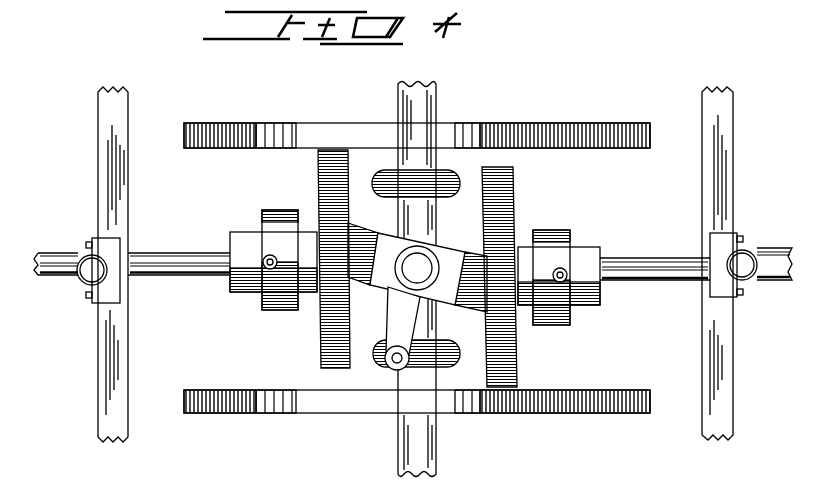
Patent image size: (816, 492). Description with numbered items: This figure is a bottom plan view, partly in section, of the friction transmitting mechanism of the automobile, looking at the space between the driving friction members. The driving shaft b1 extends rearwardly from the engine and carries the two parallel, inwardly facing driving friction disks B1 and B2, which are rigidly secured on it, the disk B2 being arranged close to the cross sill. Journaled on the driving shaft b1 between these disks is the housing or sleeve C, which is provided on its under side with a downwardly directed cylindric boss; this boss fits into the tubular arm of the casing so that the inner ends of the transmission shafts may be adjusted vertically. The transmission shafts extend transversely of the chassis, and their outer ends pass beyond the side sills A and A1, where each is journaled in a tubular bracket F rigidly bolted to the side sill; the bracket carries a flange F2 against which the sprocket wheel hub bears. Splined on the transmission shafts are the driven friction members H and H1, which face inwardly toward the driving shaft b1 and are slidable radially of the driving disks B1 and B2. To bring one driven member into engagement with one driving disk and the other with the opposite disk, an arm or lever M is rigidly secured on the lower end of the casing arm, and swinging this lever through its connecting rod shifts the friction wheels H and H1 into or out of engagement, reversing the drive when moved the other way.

The side sill A is at (725, 190).
The side sill A1 is at (127, 196).
The tubular bracket F is at (50, 265).
The flange F2 is at (78, 258).
The driving friction disk B2 is at (565, 123).
The driving friction disk B1 is at (552, 413).
The driving shaft b1 is at (437, 103).
The driven friction member H is at (328, 185).
The driven friction member H1 is at (503, 200).
The housing or sleeve C is at (435, 213).
The arm or lever M is at (402, 325).